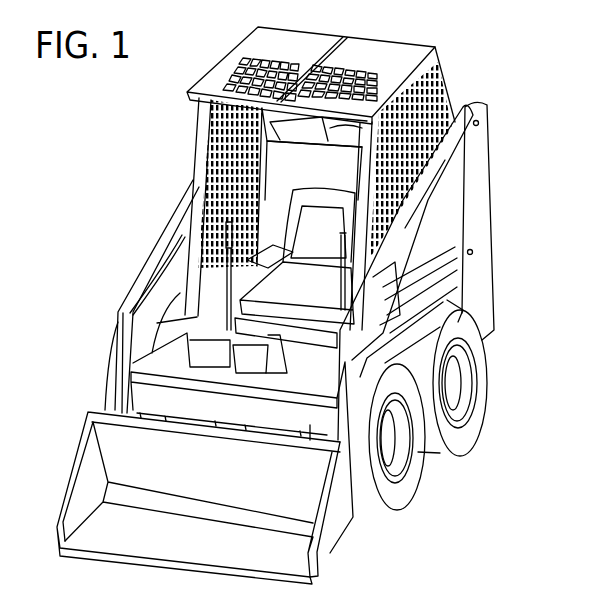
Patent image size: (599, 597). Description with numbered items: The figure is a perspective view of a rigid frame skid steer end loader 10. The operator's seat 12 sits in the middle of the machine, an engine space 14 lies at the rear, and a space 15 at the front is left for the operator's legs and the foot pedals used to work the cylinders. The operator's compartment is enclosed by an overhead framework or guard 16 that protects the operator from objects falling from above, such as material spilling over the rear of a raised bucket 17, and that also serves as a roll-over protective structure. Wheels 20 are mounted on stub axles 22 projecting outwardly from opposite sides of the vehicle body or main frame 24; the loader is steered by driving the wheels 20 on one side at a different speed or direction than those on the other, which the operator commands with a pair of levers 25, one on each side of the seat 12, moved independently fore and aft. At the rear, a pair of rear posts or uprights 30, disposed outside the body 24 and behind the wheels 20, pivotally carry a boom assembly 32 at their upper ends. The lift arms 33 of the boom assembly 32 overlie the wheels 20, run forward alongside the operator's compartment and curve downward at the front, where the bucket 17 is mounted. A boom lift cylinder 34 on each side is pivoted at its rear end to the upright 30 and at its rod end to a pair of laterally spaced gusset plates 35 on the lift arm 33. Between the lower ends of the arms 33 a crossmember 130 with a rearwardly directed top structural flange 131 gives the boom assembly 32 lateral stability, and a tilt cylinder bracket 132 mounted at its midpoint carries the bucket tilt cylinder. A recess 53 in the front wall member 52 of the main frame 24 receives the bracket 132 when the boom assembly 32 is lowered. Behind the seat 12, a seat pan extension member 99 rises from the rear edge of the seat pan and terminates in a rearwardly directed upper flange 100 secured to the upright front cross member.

The skid steer end loader 10 is at (140, 173).
The operator's seat 12 is at (300, 198).
The engine space 14 is at (277, 152).
The space for the operator's legs 15 is at (313, 363).
The overhead framework or guard 16 is at (425, 66).
The bucket 17 is at (202, 543).
The wheels 20 is at (432, 452).
The stub axles 22 is at (388, 437).
The vehicle body or main frame 24 is at (445, 285).
The levers 25 is at (342, 241).
The rear posts or uprights 30 is at (478, 198).
The boom assembly 32 is at (445, 168).
The lift arms 33 is at (176, 213).
The boom lift cylinder 34 is at (445, 263).
The gusset plates 35 is at (145, 297).
The front wall member 52 is at (273, 380).
The recess 53 is at (278, 332).
The seat pan extension member 99 is at (350, 183).
The upper flange 100 is at (338, 134).
The crossmember 130 is at (200, 407).
The top structural flange 131 is at (215, 380).
The tilt cylinder bracket 132 is at (252, 362).